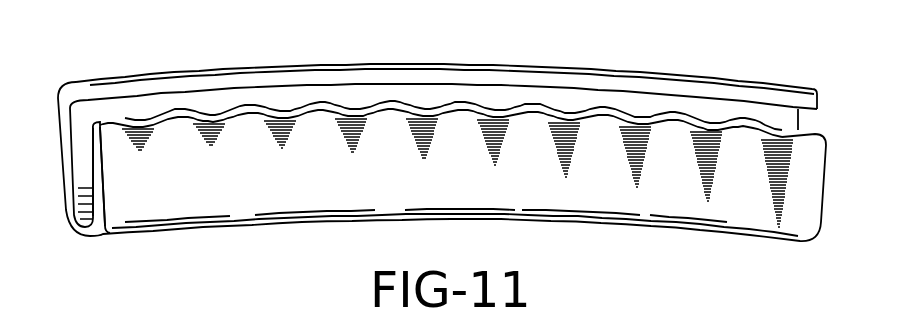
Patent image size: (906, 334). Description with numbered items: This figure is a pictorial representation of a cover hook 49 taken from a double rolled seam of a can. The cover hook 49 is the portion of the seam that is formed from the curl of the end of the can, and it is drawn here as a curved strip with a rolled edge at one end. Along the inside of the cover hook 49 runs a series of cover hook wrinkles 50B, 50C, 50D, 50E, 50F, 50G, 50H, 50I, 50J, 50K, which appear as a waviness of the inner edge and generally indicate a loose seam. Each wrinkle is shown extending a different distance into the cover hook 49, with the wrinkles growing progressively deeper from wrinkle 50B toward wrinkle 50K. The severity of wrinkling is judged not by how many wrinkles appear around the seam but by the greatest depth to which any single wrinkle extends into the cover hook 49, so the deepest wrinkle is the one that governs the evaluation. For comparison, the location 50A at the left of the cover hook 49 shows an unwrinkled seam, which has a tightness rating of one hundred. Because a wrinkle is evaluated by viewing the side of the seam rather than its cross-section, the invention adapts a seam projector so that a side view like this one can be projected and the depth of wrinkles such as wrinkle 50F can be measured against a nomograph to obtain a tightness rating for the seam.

The cover hook 49 is at (243, 213).
The unwrinkled seam portion 50A is at (110, 138).
The cover hook wrinkle 50B is at (143, 127).
The cover hook wrinkle 50C is at (214, 120).
The cover hook wrinkle 50D is at (285, 117).
The cover hook wrinkle 50E is at (356, 115).
The cover hook wrinkle 50F is at (427, 115).
The cover hook wrinkle 50G is at (498, 115).
The cover hook wrinkle 50H is at (569, 117).
The cover hook wrinkle 50I is at (640, 123).
The cover hook wrinkle 50J is at (711, 128).
The cover hook wrinkle 50K is at (782, 135).